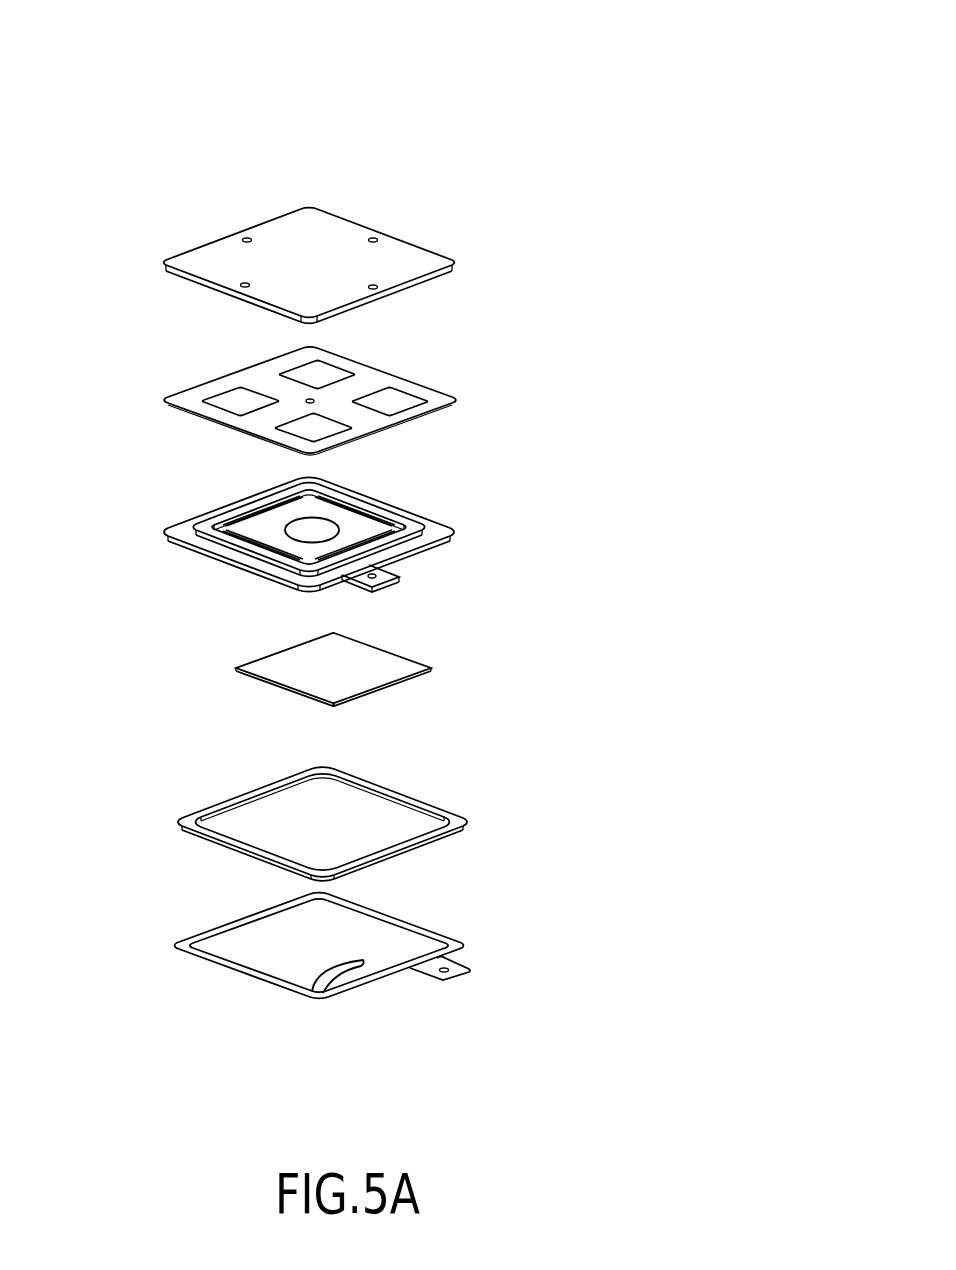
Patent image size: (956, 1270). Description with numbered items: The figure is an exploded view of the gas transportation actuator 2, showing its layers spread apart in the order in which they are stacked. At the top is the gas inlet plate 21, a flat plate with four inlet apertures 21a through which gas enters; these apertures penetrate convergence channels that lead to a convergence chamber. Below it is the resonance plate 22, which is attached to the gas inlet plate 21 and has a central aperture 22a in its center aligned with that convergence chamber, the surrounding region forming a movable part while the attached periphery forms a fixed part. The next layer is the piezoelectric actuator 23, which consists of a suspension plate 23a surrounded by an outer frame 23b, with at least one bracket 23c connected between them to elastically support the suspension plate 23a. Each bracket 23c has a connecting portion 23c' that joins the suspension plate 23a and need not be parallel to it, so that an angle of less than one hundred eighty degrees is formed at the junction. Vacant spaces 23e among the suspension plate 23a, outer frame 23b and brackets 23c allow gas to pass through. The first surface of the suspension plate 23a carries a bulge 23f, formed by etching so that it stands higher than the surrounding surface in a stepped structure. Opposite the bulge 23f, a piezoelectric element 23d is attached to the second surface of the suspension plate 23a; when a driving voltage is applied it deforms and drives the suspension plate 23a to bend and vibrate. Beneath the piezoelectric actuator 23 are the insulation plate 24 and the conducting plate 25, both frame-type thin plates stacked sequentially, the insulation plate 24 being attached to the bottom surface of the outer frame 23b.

The gas transportation actuator 2 is at (672, 26).
The gas inlet plate 21 is at (449, 229).
The inlet aperture 21a is at (246, 236).
The resonance plate 22 is at (457, 374).
The central aperture 22a is at (308, 400).
The piezoelectric actuator 23 is at (575, 482).
The suspension plate 23a is at (393, 503).
The outer frame 23b is at (443, 538).
The bracket 23c is at (452, 595).
The connecting portion 23c' is at (331, 496).
The piezoelectric element 23d is at (385, 668).
The vacant space 23e is at (415, 535).
The bulge 23f is at (317, 532).
The insulation plate 24 is at (467, 791).
The conducting plate 25 is at (462, 921).